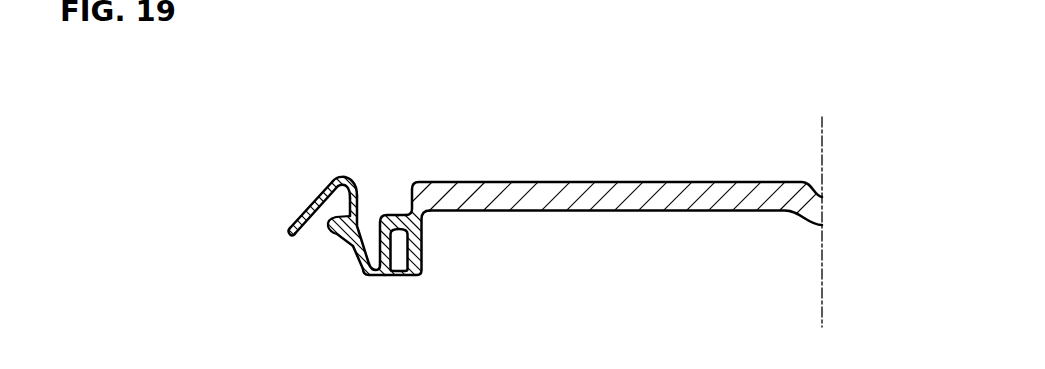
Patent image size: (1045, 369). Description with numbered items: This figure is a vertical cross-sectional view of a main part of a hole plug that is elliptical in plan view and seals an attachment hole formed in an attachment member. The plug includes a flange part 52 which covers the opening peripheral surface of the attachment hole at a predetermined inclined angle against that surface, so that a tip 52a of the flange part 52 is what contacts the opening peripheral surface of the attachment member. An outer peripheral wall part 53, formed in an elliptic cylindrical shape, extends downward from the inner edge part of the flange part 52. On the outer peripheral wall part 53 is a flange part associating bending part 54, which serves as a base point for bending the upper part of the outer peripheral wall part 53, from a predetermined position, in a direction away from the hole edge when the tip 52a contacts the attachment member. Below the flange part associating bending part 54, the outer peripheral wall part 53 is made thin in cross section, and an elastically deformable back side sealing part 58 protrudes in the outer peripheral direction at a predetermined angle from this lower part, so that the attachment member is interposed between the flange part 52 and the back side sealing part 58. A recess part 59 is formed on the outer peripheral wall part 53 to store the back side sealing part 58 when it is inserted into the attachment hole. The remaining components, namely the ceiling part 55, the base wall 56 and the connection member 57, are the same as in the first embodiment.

The flange part 52 is at (307, 206).
The tip of the flange part 52a is at (288, 234).
The outer peripheral wall part 53 is at (327, 185).
The flange part associating bending part 54 is at (358, 204).
The ceiling part 55 is at (608, 182).
The base wall 56 is at (422, 267).
The connection member 57 is at (388, 270).
The back side sealing part 58 is at (328, 225).
The recess part 59 is at (332, 232).